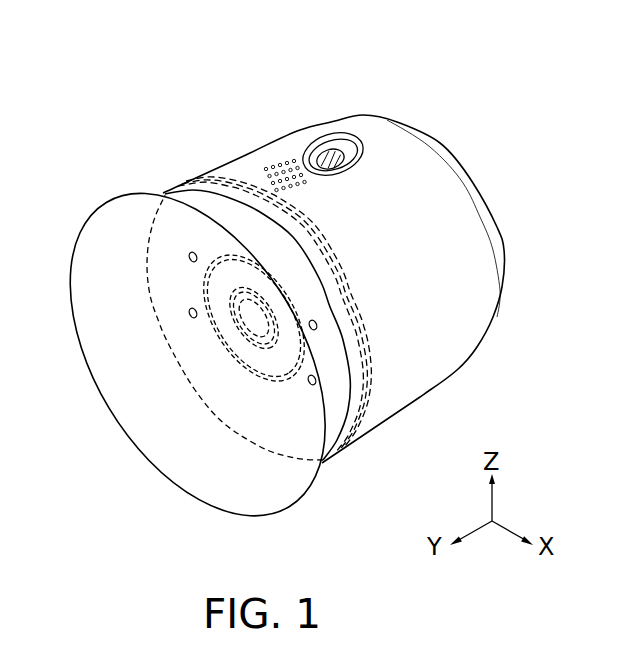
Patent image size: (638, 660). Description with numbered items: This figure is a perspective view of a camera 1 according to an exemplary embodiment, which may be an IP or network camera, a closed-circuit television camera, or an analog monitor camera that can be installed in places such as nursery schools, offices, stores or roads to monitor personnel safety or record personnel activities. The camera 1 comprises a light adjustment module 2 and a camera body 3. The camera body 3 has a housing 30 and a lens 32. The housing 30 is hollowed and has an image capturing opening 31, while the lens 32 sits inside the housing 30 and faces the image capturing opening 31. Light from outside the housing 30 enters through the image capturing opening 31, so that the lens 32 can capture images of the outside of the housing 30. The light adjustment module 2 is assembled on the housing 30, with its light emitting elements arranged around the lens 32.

The camera 1 is at (110, 100).
The light adjustment module 2 is at (163, 299).
The camera body 3 is at (224, 166).
The housing 30 is at (460, 255).
The image capturing opening 31 is at (147, 423).
The lens 32 is at (257, 330).